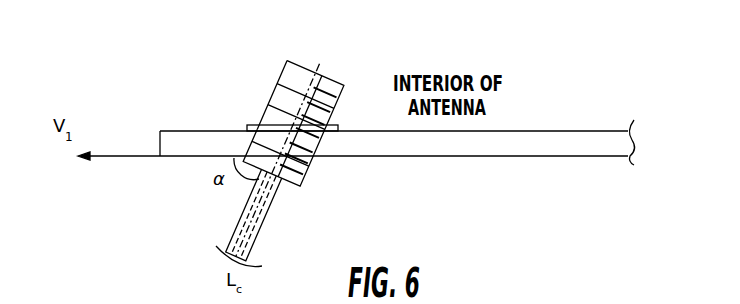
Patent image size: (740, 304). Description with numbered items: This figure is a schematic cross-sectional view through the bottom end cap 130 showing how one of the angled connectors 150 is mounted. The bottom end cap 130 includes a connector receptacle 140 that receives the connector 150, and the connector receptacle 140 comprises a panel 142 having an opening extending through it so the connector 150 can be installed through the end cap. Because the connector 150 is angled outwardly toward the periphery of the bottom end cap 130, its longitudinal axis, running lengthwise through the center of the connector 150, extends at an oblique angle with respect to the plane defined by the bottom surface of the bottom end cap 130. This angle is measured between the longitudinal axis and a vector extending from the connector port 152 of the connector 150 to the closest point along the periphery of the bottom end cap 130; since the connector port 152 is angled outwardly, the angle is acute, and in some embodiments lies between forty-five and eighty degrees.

The bottom end cap 130 is at (527, 157).
The connector receptacle 140 is at (255, 121).
The panel 142 is at (247, 126).
The connector 150 is at (312, 53).
The connector port 152 is at (311, 158).